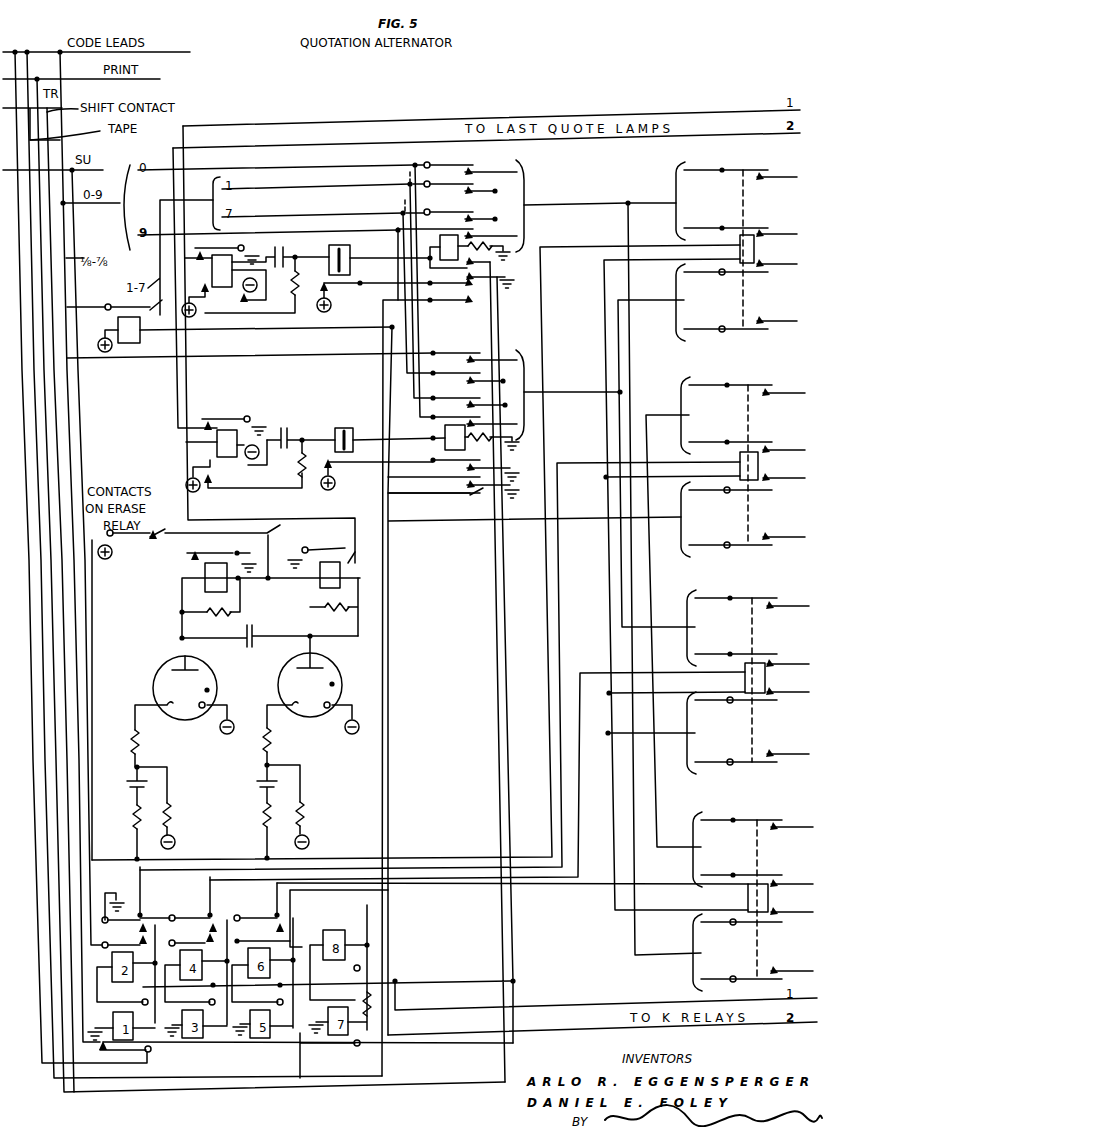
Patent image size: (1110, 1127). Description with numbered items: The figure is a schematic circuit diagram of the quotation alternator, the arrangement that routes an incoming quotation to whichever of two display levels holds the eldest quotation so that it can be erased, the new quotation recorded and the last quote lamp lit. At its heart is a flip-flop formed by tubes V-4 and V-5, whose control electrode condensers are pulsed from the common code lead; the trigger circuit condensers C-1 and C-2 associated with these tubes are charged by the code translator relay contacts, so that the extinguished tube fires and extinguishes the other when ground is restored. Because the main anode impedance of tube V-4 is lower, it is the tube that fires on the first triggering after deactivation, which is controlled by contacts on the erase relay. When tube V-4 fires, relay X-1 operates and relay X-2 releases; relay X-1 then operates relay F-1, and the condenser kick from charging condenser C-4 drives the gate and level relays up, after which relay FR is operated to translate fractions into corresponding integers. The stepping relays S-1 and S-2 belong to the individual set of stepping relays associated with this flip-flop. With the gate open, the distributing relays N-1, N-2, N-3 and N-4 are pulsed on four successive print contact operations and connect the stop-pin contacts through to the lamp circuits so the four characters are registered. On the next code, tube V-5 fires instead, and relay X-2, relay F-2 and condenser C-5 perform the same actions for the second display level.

The FR relay FR is at (245, 334).
The relay F-1 is at (240, 281).
The relay F-2 is at (244, 454).
The condenser C-4 is at (280, 253).
The condenser C-5 is at (301, 433).
The stepping relay S-1 is at (477, 224).
The stepping relay S-2 is at (456, 422).
The distributing relay N-1 is at (736, 251).
The distributing relay N-2 is at (743, 467).
The distributing relay N-3 is at (748, 682).
The distributing relay N-4 is at (753, 901).
The relay X-1 is at (219, 583).
The relay X-2 is at (323, 591).
The tube V-4 is at (181, 693).
The tube V-5 is at (313, 685).
The trigger circuit condenser C-1 is at (126, 785).
The trigger circuit condenser C-2 is at (254, 783).